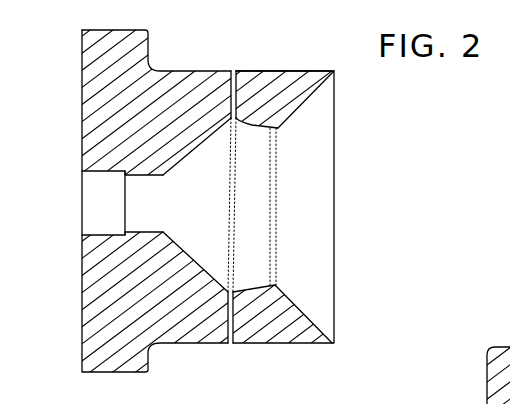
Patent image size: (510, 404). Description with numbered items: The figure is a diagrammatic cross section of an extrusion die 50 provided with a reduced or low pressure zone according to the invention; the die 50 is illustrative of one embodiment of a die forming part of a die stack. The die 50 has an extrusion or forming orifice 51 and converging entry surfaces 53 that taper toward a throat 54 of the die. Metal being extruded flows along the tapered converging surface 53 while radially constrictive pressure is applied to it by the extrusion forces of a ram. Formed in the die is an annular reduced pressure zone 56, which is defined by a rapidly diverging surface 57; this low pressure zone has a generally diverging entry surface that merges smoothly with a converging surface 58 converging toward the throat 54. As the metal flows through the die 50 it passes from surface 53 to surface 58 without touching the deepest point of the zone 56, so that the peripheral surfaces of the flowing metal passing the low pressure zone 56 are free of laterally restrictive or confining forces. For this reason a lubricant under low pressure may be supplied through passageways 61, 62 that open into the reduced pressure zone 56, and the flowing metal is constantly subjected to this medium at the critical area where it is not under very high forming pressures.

The die 50 is at (223, 71).
The extrusion or forming orifice 51 is at (147, 232).
The converging entry surfaces 53 is at (305, 313).
The throat 54 is at (165, 176).
The annular reduced pressure zone 56 is at (241, 122).
The rapidly diverging surface 57 is at (262, 284).
The converging surface 58 is at (208, 137).
The passageway 61 is at (235, 344).
The passageway 62 is at (237, 71).